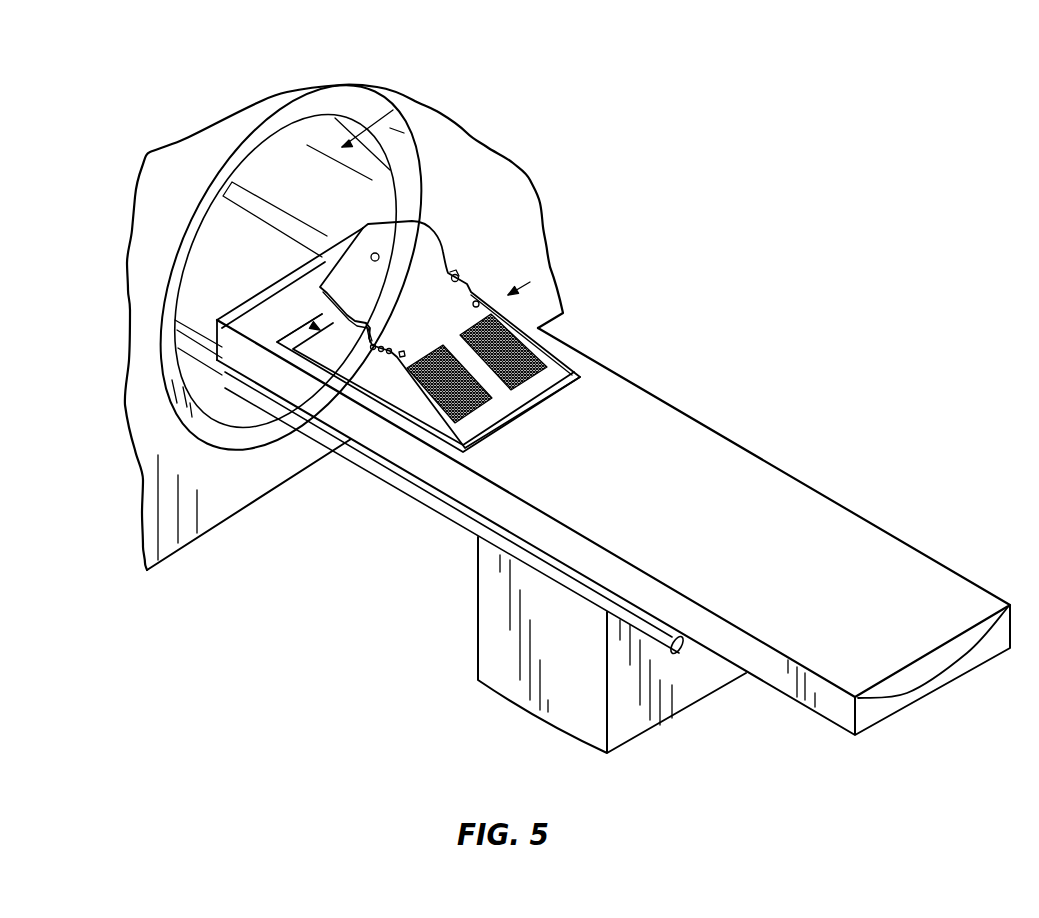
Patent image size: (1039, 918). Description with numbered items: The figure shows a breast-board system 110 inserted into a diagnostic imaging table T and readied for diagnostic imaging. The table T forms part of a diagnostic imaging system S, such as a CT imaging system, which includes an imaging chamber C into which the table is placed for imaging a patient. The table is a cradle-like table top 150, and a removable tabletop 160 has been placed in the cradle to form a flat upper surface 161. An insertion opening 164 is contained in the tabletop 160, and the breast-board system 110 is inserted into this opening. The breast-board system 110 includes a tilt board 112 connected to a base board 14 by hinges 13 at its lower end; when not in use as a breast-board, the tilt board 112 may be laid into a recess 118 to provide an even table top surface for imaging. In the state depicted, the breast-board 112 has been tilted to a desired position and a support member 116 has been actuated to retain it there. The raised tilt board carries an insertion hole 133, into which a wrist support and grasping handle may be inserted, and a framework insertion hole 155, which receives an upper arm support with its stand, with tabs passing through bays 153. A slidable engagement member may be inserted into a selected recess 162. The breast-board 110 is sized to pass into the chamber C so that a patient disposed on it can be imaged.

The diagnostic imaging system S is at (423, 147).
The imaging chamber C is at (393, 110).
The diagnostic imaging table T is at (297, 265).
The flat upper surface 161 is at (817, 523).
The removable tabletop 160 is at (900, 683).
The cradle-like table top 150 is at (872, 717).
The support member 116 is at (393, 365).
The breast-board system 110 is at (530, 282).
The tilt board 112 is at (350, 246).
The insertion hole 133 is at (379, 256).
The framework insertion hole 155 is at (456, 276).
The bays 153 is at (472, 286).
The hinges 13 is at (543, 350).
The base board 14 is at (548, 382).
The recess 118 is at (376, 355).
The recess 162 is at (369, 344).
The insertion opening 164 is at (320, 330).